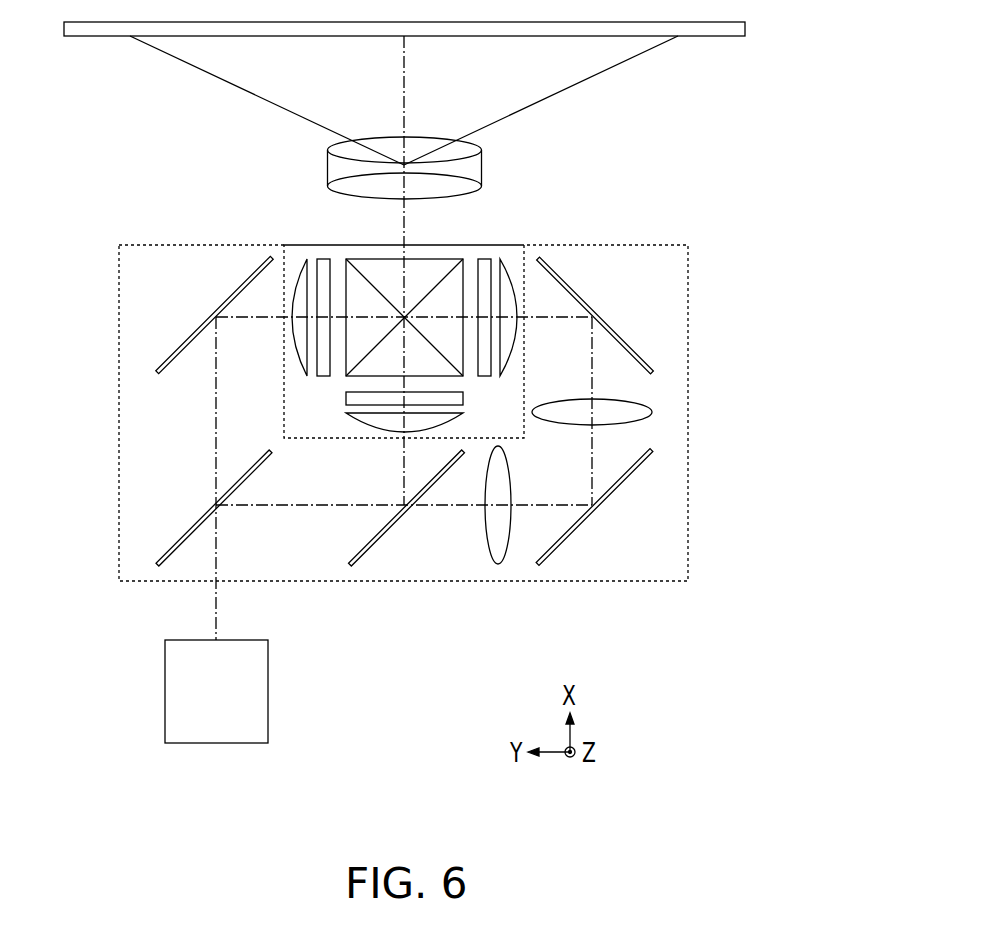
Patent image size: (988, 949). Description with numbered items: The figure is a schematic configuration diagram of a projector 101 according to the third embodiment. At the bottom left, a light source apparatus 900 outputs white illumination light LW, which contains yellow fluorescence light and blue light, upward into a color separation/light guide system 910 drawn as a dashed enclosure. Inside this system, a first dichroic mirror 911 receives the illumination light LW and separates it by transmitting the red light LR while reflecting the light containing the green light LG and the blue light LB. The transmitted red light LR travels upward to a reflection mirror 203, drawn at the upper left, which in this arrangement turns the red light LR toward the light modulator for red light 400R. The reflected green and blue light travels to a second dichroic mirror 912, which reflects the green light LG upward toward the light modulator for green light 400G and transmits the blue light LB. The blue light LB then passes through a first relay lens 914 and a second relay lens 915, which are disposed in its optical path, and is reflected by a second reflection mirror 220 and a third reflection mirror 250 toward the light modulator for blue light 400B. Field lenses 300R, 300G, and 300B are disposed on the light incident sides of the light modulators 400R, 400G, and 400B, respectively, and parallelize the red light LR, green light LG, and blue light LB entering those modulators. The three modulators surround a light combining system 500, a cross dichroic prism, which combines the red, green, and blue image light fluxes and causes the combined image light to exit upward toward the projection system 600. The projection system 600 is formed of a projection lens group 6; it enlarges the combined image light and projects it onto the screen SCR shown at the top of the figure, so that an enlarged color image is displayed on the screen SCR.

The projector 101 is at (146, 224).
The projection lens group 6 is at (388, 145).
The projection system 600 is at (327, 158).
The light combining system 500 is at (412, 265).
The field lens 300R is at (300, 259).
The field lens 300G is at (346, 420).
The field lens 300B is at (507, 257).
The light modulator for red light 400R is at (323, 259).
The light modulator for green light 400G is at (346, 400).
The light modulator for blue light 400B is at (485, 257).
The dichroic mirror 203 is at (197, 330).
The third reflection mirror 250 is at (618, 332).
The second reflection mirror 220 is at (613, 493).
The color separation/light guide system 910 is at (119, 362).
The first dichroic mirror 911 is at (185, 533).
The second dichroic mirror 912 is at (385, 535).
The first relay lens 914 is at (500, 558).
The second relay lens 915 is at (638, 412).
The light source apparatus 900 is at (268, 690).
The screen SCR is at (717, 40).
The red light LR is at (216, 463).
The green light LG is at (404, 475).
The blue light LB is at (590, 477).
The white illumination light LW is at (225, 526).